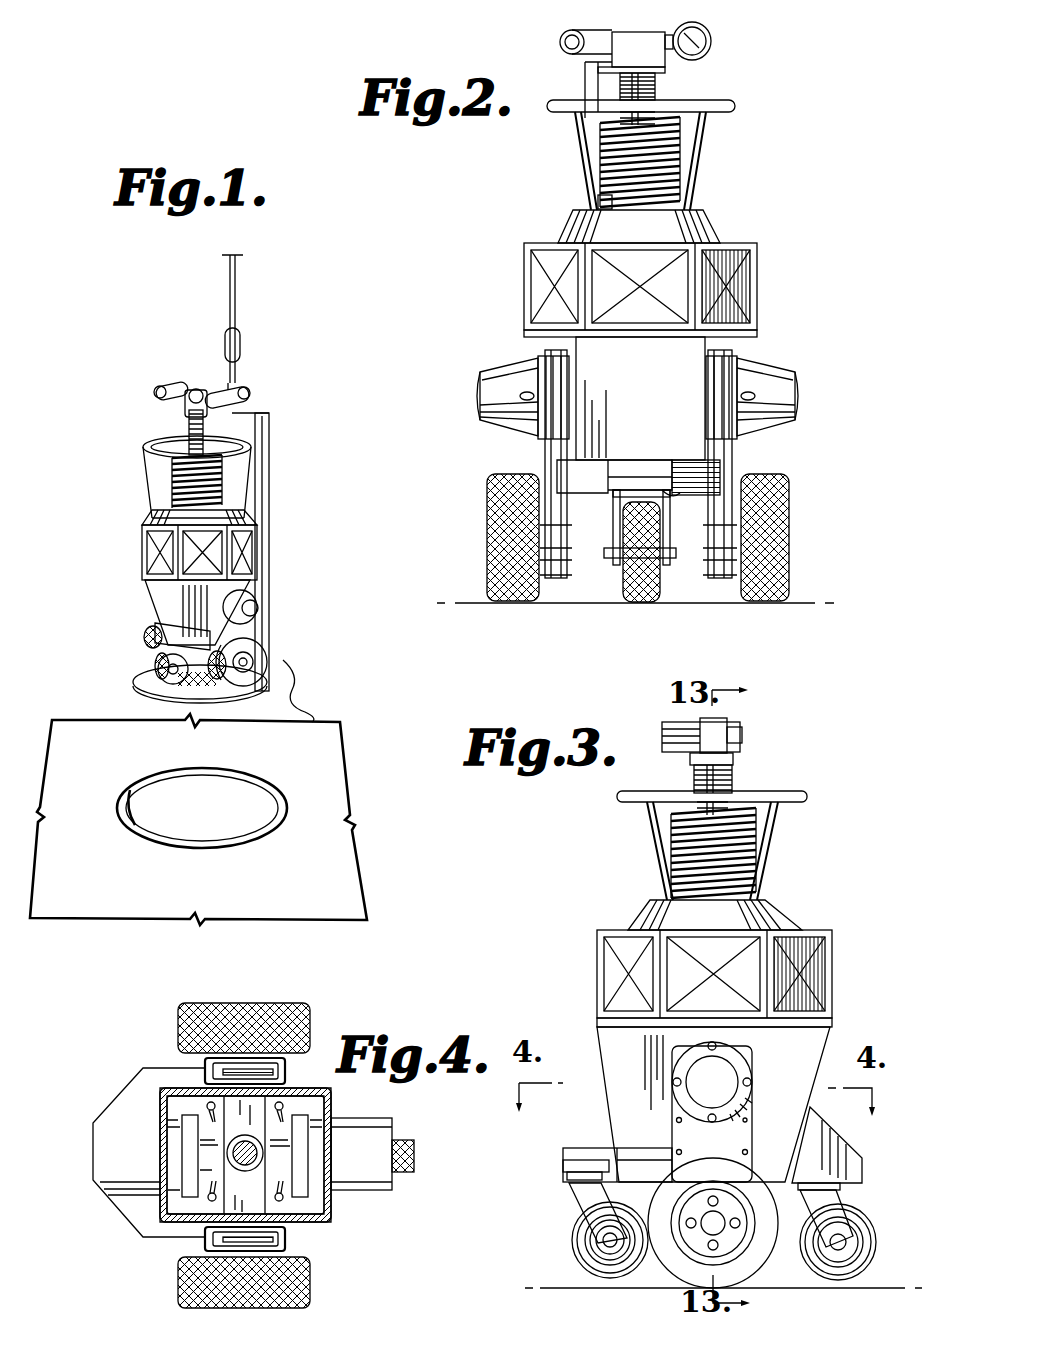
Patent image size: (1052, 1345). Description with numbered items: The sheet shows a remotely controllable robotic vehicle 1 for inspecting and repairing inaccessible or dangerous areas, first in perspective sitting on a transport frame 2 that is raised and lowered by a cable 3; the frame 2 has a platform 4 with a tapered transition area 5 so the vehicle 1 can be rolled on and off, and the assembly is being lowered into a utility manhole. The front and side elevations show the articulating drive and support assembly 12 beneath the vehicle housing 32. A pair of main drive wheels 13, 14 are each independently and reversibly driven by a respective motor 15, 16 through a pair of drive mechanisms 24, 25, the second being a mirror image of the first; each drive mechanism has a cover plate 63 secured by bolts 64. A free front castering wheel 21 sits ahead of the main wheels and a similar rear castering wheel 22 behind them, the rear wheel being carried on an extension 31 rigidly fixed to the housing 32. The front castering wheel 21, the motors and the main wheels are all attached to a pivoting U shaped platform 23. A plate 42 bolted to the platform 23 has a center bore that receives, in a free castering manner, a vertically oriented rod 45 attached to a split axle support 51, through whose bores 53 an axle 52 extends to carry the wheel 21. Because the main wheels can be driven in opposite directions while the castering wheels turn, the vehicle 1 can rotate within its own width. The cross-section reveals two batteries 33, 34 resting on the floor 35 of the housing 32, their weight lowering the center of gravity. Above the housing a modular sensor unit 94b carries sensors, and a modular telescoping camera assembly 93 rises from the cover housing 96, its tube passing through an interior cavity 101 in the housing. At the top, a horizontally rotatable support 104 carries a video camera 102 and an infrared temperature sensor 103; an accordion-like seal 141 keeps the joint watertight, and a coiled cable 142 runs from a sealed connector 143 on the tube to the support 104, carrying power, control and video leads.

In FIG. 1, the robotic vehicle 1 is at (113, 473).
In FIG. 1, the transport frame 2 is at (270, 471).
In FIG. 1, the cable 3 is at (237, 284).
In FIG. 1, the platform 4 is at (150, 660).
In FIG. 1, the tapered transition area 5 is at (136, 685).
In FIG. 2, the articulating drive and support assembly 12 is at (460, 507).
In FIG. 1, the articulating drive and support assembly 12 is at (131, 624).
In FIG. 3, the articulating drive and support assembly 12 is at (508, 1241).
In FIG. 2, the main drive wheel 13 is at (490, 474).
In FIG. 4, the main drive wheel 13 is at (309, 1006).
In FIG. 2, the main drive wheel 14 is at (790, 484).
In FIG. 1, the main drive wheel 14 is at (267, 656).
In FIG. 3, the main drive wheel 14 is at (720, 1165).
In FIG. 4, the main drive wheel 14 is at (178, 1300).
In FIG. 2, the motor 15 is at (493, 360).
In FIG. 2, the motor 16 is at (776, 378).
In FIG. 1, the motor 16 is at (258, 608).
In FIG. 3, the motor 16 is at (730, 1064).
In FIG. 2, the front castering wheel 21 is at (638, 604).
In FIG. 3, the front castering wheel 21 is at (592, 1275).
In FIG. 3, the rear castering wheel 22 is at (852, 1205).
In FIG. 4, the rear castering wheel 22 is at (412, 1140).
In FIG. 2, the U shaped platform 23 is at (688, 461).
In FIG. 3, the U shaped platform 23 is at (597, 1150).
In FIG. 4, the U shaped platform 23 is at (128, 1095).
In FIG. 2, the drive mechanism 24 is at (545, 446).
In FIG. 4, the drive mechanism 24 is at (205, 1066).
In FIG. 2, the drive mechanism 25 is at (732, 448).
In FIG. 1, the drive mechanism 25 is at (200, 632).
In FIG. 3, the drive mechanism 25 is at (752, 1125).
In FIG. 4, the drive mechanism 25 is at (285, 1246).
In FIG. 3, the extension 31 is at (841, 1146).
In FIG. 4, the extension 31 is at (361, 1192).
In FIG. 2, the vehicle housing 32 is at (637, 400).
In FIG. 1, the vehicle housing 32 is at (148, 589).
In FIG. 3, the vehicle housing 32 is at (617, 1046).
In FIG. 4, the vehicle housing 32 is at (160, 1163).
In FIG. 4, the battery 33 is at (172, 1127).
In FIG. 4, the battery 34 is at (325, 1104).
In FIG. 4, the floor 35 is at (288, 1094).
In FIG. 2, the plate 42 is at (633, 476).
In FIG. 3, the plate 42 is at (562, 1164).
In FIG. 2, the vertically oriented rod 45 is at (676, 494).
In FIG. 3, the vertically oriented rod 45 is at (567, 1176).
In FIG. 2, the split axle support 51 is at (613, 523).
In FIG. 3, the split axle support 51 is at (578, 1198).
In FIG. 3, the axle 52 is at (602, 1240).
In FIG. 3, the bore 53 is at (598, 1251).
In FIG. 3, the cover plate 63 is at (749, 1153).
In FIG. 3, the bolt 64 is at (675, 1121).
In FIG. 2, the telescoping camera assembly 93 is at (573, 160).
In FIG. 1, the telescoping camera assembly 93 is at (132, 533).
In FIG. 3, the telescoping camera assembly 93 is at (656, 847).
In FIG. 2, the sensor unit 94b is at (757, 248).
In FIG. 1, the sensor unit 94b is at (257, 538).
In FIG. 3, the sensor unit 94b is at (597, 936).
In FIG. 2, the cover housing 96 is at (702, 230).
In FIG. 1, the cover housing 96 is at (199, 517).
In FIG. 3, the cover housing 96 is at (784, 921).
In FIG. 4, the interior cavity 101 is at (300, 1152).
In FIG. 2, the video camera 102 is at (711, 41).
In FIG. 1, the video camera 102 is at (247, 388).
In FIG. 3, the video camera 102 is at (730, 724).
In FIG. 2, the infrared temperature sensor 103 is at (560, 42).
In FIG. 1, the infrared temperature sensor 103 is at (152, 392).
In FIG. 2, the horizontally rotatable support 104 is at (665, 62).
In FIG. 1, the horizontally rotatable support 104 is at (198, 388).
In FIG. 3, the horizontally rotatable support 104 is at (733, 768).
In FIG. 2, the accordion-like seal 141 is at (596, 84).
In FIG. 1, the accordion-like seal 141 is at (189, 419).
In FIG. 2, the coiled cable 142 is at (684, 160).
In FIG. 1, the coiled cable 142 is at (170, 492).
In FIG. 3, the coiled cable 142 is at (758, 868).
In FIG. 2, the sealed connector 143 is at (598, 200).